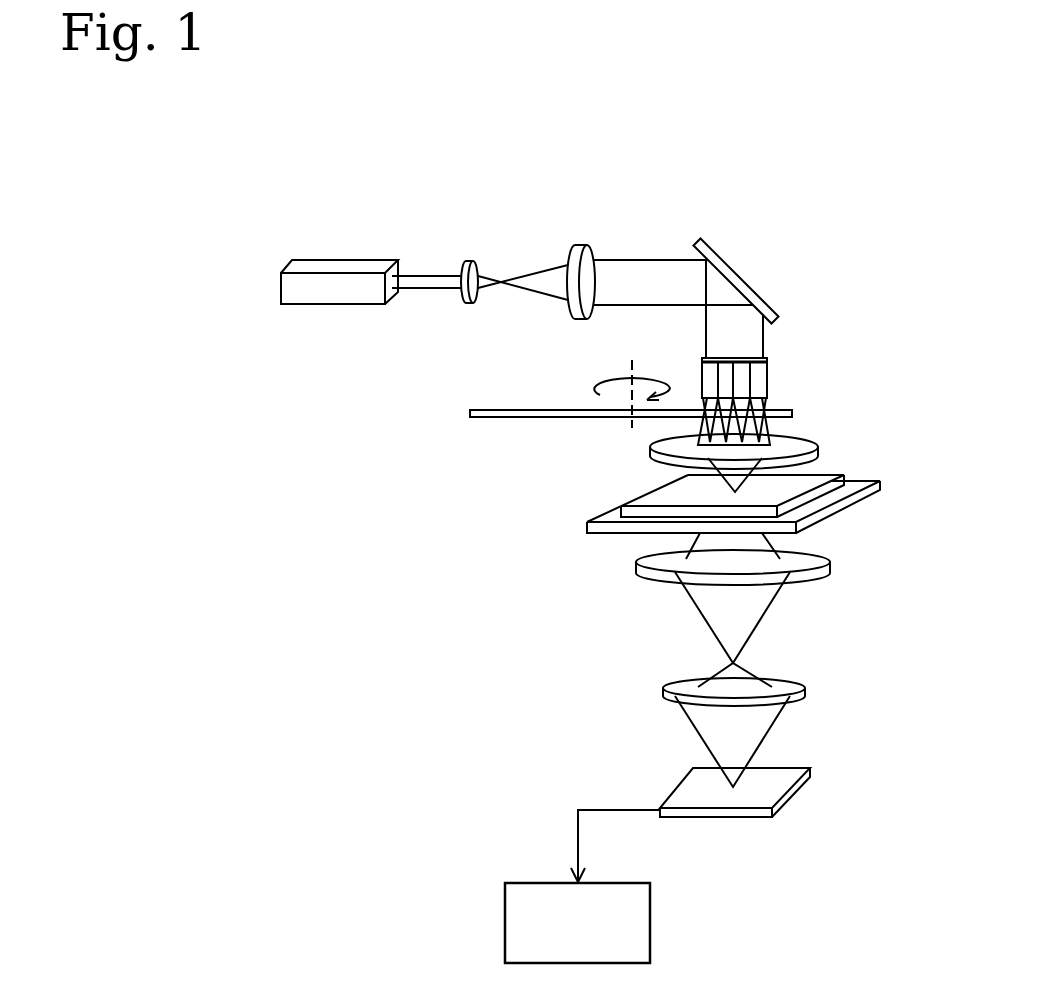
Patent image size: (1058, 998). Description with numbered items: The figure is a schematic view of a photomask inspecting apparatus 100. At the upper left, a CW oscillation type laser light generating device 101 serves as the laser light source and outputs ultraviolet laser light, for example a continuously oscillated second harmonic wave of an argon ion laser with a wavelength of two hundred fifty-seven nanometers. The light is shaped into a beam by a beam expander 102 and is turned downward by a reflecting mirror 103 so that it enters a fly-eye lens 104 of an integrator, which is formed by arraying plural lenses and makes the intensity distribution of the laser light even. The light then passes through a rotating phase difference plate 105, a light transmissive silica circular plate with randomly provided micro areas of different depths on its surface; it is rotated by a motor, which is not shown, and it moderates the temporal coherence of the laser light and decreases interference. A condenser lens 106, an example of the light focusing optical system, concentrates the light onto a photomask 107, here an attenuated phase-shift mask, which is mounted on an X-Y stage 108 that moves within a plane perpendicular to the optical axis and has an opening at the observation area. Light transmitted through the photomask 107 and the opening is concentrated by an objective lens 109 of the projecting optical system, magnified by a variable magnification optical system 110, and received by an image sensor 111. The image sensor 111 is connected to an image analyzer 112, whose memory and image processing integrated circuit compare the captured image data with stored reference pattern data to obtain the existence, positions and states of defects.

The photomask inspecting apparatus 100 is at (665, 207).
The laser light generating device 101 is at (350, 268).
The beam expander 102 is at (606, 236).
The reflecting mirror 103 is at (748, 282).
The fly-eye lens 104 is at (767, 375).
The rotating phase difference plate 105 is at (512, 409).
The condenser lens 106 is at (800, 445).
The photomask 107 is at (668, 502).
The X-Y stage 108 is at (857, 498).
The objective lens 109 is at (828, 565).
The variable magnification optical system 110 is at (805, 690).
The image sensor 111 is at (800, 790).
The image analyzer 112 is at (638, 945).